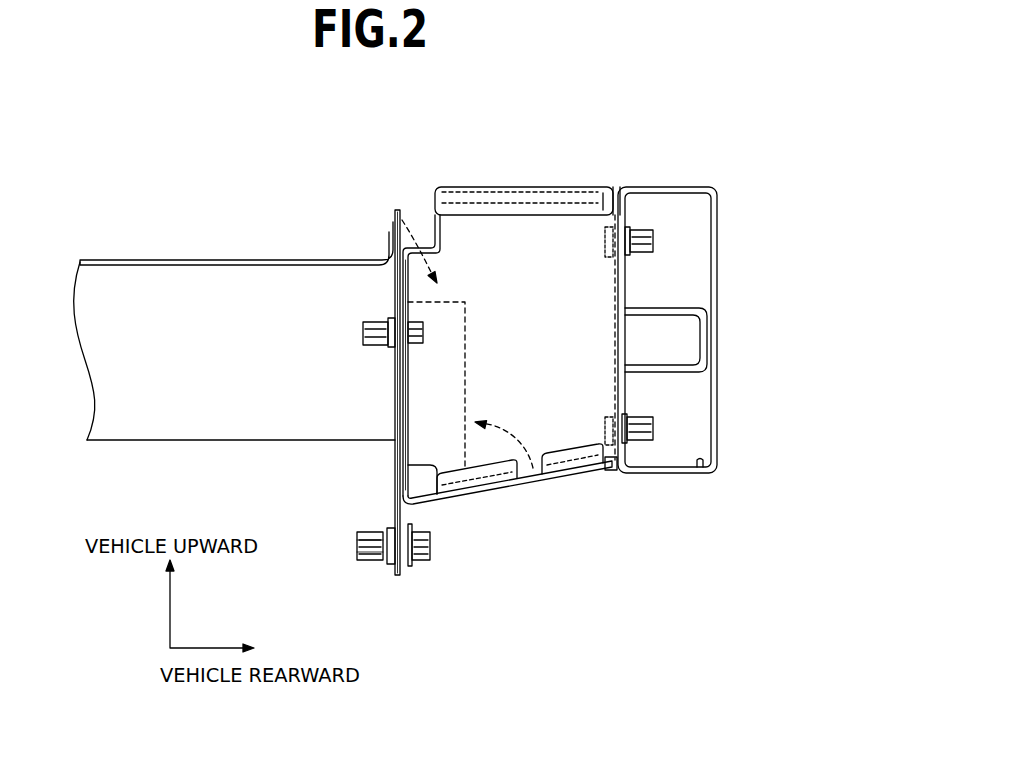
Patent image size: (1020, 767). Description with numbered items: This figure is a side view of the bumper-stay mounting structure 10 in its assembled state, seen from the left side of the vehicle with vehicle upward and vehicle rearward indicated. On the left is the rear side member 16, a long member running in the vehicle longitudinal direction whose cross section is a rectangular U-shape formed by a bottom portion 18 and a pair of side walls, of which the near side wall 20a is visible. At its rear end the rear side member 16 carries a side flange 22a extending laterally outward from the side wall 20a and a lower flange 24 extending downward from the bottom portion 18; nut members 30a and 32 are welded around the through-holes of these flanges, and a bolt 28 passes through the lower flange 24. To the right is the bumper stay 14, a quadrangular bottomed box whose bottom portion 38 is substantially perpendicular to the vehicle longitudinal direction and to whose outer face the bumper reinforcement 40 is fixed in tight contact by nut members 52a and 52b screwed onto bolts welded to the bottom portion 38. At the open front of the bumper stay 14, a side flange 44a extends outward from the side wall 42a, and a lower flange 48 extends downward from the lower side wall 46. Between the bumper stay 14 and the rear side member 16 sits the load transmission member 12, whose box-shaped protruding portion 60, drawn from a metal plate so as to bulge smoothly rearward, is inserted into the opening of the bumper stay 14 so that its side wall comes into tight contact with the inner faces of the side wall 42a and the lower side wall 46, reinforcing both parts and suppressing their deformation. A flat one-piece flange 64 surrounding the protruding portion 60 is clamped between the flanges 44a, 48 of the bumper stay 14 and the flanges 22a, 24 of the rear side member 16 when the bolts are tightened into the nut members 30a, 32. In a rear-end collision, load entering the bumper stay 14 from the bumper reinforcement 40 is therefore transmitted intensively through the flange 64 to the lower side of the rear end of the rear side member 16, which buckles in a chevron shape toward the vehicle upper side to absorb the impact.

The bumper-stay mounting structure 10 is at (380, 143).
The load transmission member 12 is at (514, 471).
The bumper stay 14 is at (545, 172).
The rear side member 16 is at (212, 238).
The bottom portion 18 is at (283, 442).
The side wall 20a is at (157, 395).
The side flange 22a is at (393, 288).
The lower flange 24 is at (403, 563).
The bolt 28 is at (420, 540).
The nut member 30a is at (366, 345).
The nut member 32 is at (355, 542).
The bottom portion 38 is at (617, 340).
The bumper reinforcement 40 is at (717, 383).
The side wall 42a is at (512, 250).
The side flange 44a is at (408, 422).
The lower side wall 46 is at (523, 483).
The lower flange 48 is at (410, 558).
The nut member 52a is at (640, 230).
The nut member 52b is at (641, 443).
The protruding portion 60 is at (393, 219).
The flange 64 is at (395, 497).